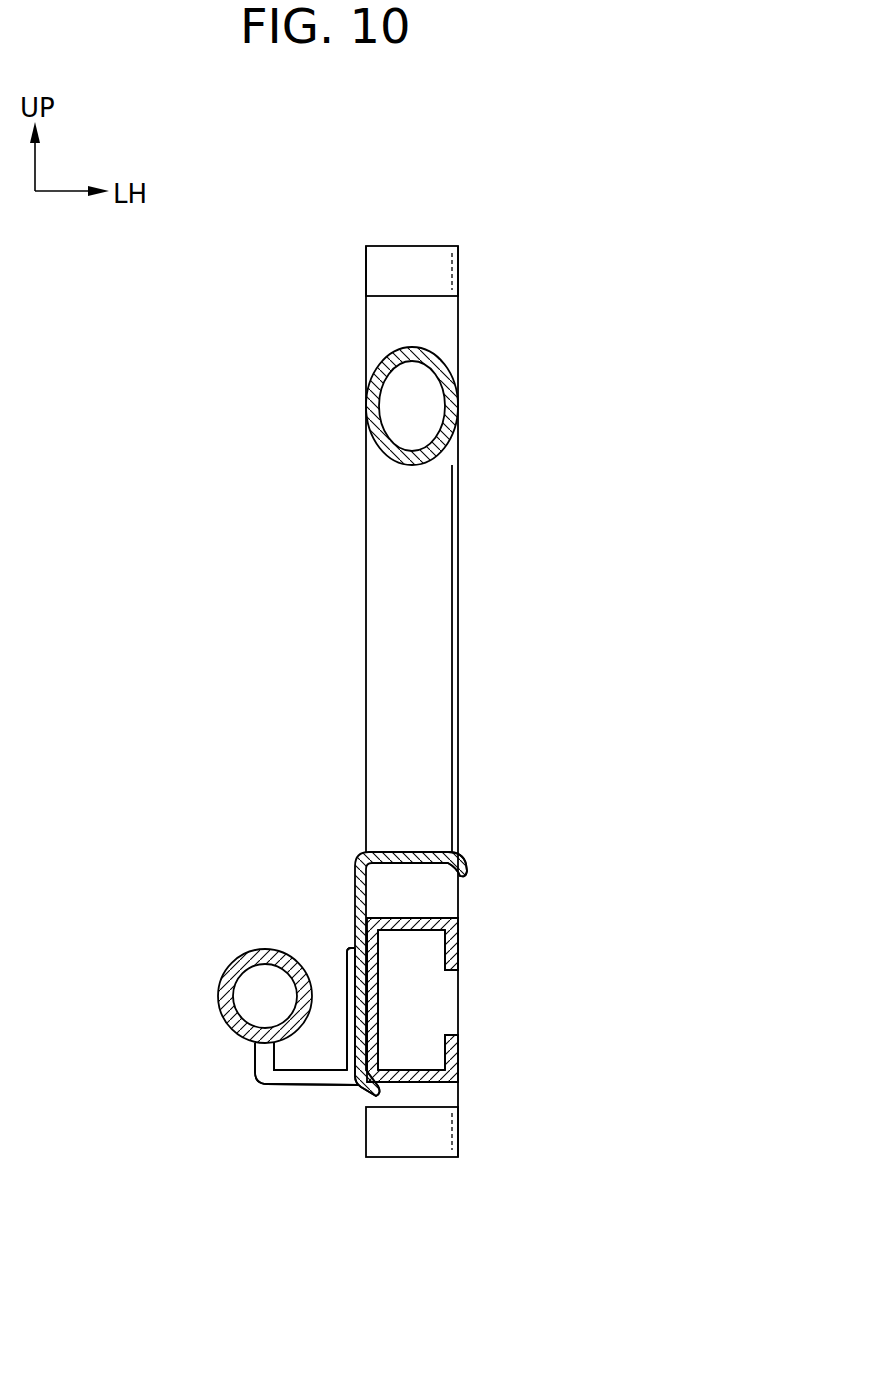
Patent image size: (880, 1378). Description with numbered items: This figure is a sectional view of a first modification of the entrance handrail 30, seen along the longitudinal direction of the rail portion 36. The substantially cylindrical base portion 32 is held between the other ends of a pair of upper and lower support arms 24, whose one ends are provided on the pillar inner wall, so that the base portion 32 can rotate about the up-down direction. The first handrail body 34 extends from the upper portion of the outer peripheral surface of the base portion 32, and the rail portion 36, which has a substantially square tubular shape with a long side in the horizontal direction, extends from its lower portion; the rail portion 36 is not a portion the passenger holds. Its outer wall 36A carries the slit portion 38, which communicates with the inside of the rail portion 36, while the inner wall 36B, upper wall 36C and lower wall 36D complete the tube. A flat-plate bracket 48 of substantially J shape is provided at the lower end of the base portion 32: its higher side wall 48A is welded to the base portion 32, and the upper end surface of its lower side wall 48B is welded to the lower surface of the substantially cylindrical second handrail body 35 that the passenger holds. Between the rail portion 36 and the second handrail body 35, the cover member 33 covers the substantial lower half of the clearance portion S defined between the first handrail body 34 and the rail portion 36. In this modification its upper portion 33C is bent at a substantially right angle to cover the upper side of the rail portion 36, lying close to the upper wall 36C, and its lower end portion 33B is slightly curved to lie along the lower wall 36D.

The support arm 24 is at (411, 259).
The entrance handrail 30 is at (468, 327).
The base portion 32 is at (458, 670).
The cover member 33 is at (354, 857).
The lower end portion 33B is at (360, 1092).
The upper portion 33C is at (420, 851).
The first handrail body 34 is at (450, 355).
The second handrail body 35 is at (240, 962).
The rail portion 36 is at (461, 913).
The outer wall 36A is at (460, 958).
The inner wall 36B is at (366, 1010).
The upper wall 36C is at (427, 915).
The lower wall 36D is at (397, 1083).
The slit portion 38 is at (452, 1030).
The bracket 48 is at (285, 1091).
The side wall 48A is at (347, 948).
The side wall 48B is at (255, 1063).
The clearance portion S is at (430, 505).